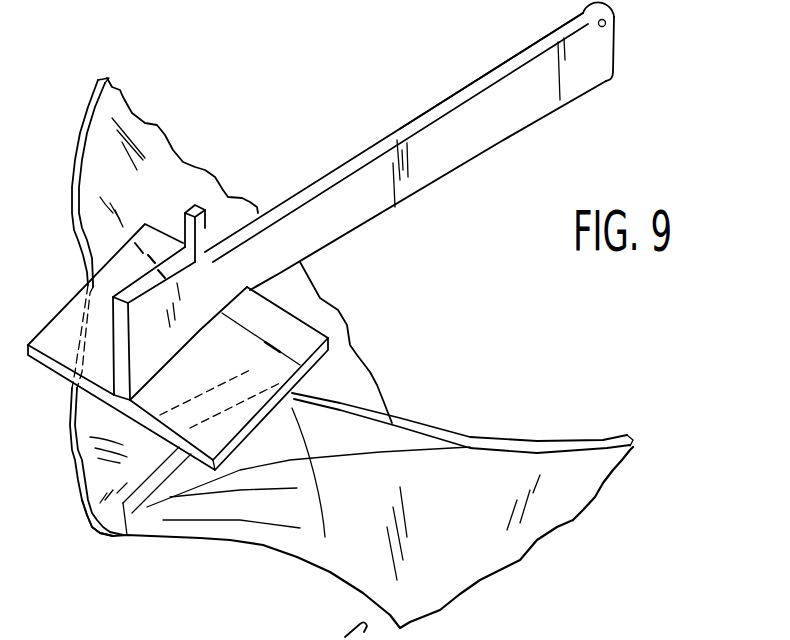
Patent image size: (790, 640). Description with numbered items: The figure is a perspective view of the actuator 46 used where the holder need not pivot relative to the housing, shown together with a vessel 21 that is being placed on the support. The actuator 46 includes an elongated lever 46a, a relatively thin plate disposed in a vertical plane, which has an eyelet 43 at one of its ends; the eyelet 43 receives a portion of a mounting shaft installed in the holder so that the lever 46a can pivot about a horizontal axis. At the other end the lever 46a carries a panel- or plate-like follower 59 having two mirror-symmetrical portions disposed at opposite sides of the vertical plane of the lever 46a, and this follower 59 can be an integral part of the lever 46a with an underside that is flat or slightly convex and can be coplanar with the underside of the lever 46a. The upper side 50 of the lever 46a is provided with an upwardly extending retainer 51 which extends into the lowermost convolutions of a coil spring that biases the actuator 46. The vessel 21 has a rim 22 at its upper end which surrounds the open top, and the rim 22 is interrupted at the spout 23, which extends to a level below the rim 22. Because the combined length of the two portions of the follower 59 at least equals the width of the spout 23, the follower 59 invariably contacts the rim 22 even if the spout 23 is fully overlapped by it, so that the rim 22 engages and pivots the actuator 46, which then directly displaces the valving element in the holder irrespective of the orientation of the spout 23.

The vessel 21 is at (493, 534).
The rim 22 is at (587, 447).
The spout 23 is at (153, 520).
The eyelet 43 is at (608, 23).
The actuator 46 is at (422, 164).
The lever 46a is at (472, 132).
The upper side of the lever 50 is at (408, 125).
The retainer 51 is at (207, 229).
The follower 59 is at (243, 333).